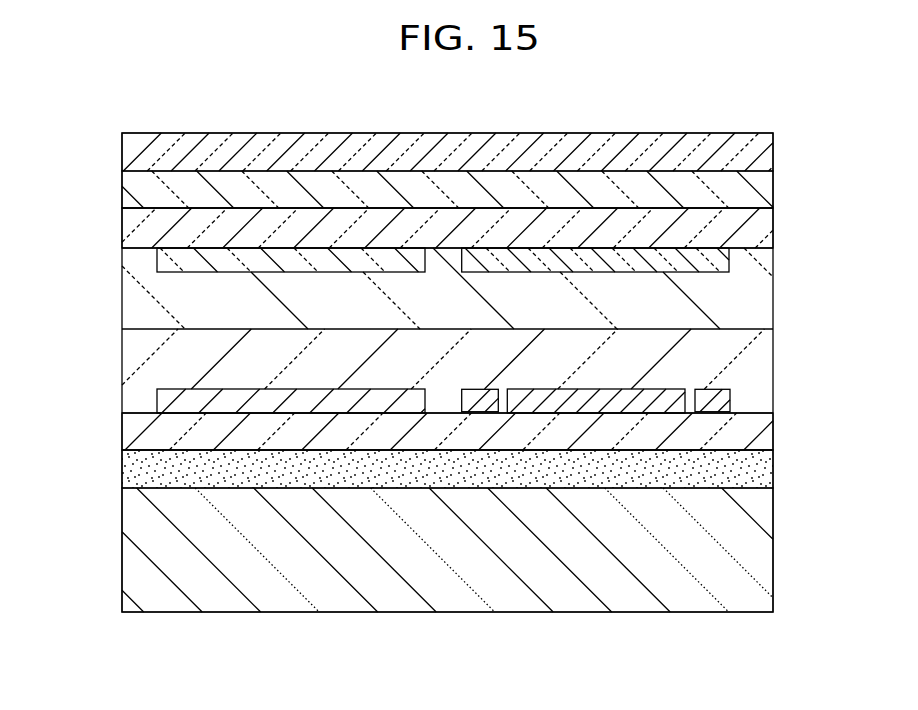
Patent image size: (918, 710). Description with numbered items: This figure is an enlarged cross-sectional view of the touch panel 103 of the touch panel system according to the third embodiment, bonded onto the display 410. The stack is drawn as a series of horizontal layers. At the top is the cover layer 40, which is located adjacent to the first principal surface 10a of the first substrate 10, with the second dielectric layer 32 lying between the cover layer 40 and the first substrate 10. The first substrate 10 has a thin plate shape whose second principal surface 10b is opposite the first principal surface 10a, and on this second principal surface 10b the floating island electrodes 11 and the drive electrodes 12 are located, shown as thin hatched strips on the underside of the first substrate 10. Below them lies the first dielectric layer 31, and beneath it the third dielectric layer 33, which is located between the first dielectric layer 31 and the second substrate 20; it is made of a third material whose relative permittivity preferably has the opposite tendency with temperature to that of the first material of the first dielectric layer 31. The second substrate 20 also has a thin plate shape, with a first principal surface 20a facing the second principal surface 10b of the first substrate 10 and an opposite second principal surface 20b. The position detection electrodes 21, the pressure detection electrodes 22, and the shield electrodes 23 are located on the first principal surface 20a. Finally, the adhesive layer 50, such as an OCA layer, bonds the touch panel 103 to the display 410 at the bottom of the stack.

The touch panel 103 is at (462, 377).
The cover layer 40 is at (755, 148).
The second dielectric layer 32 is at (757, 185).
The first substrate 10 is at (760, 226).
The first principal surface 10a is at (152, 208).
The second principal surface 10b is at (135, 248).
The floating island electrodes 11 is at (353, 262).
The drive electrodes 12 is at (633, 262).
The first dielectric layer 31 is at (760, 289).
The third dielectric layer 33 is at (760, 368).
The position detection electrodes 21 is at (300, 403).
The pressure detection electrodes 22 is at (593, 405).
The shield electrodes 23 is at (483, 405).
The second substrate 20 is at (760, 438).
The first principal surface 20a is at (135, 412).
The second principal surface 20b is at (155, 450).
The adhesive layer 50 is at (760, 468).
The display 410 is at (762, 553).